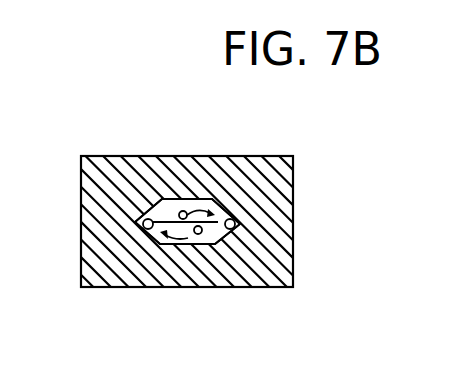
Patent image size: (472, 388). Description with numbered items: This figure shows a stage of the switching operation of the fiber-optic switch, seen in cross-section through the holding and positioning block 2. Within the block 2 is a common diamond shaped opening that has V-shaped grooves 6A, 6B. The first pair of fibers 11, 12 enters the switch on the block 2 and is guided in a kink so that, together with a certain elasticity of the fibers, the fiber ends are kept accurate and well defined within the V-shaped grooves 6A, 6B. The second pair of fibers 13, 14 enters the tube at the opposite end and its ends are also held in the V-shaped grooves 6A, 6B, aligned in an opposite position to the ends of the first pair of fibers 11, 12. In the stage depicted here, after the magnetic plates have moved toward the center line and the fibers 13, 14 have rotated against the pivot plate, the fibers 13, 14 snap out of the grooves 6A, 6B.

The holding and positioning block 2 is at (111, 277).
The V-shaped groove 6A is at (166, 216).
The V-shaped groove 6B is at (229, 228).
The fiber 11 is at (143, 222).
The fiber 12 is at (236, 225).
The fiber 13 is at (183, 211).
The fiber 14 is at (199, 234).